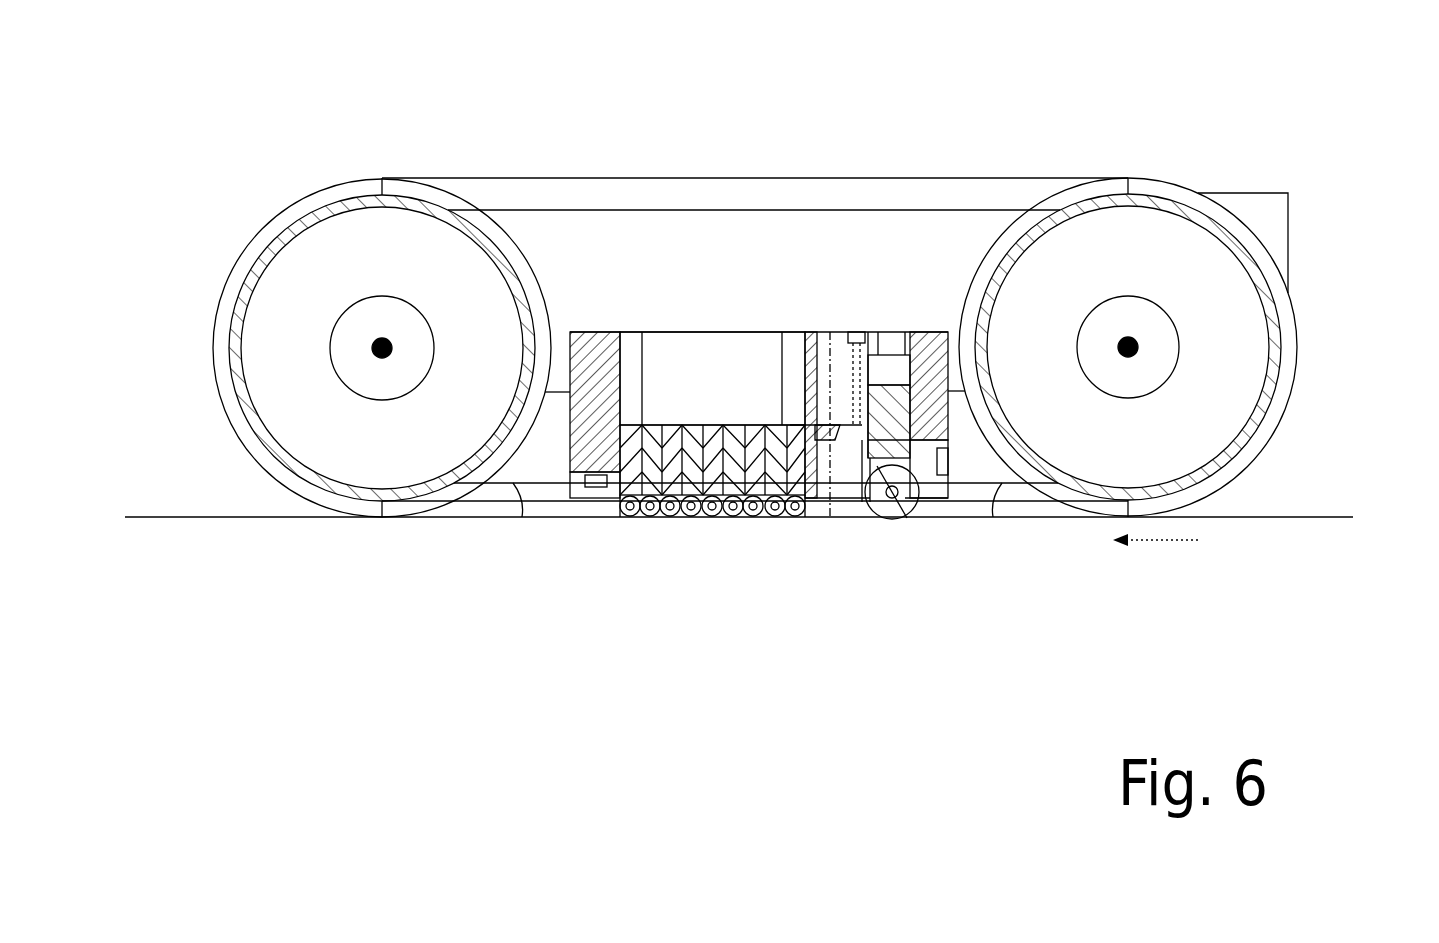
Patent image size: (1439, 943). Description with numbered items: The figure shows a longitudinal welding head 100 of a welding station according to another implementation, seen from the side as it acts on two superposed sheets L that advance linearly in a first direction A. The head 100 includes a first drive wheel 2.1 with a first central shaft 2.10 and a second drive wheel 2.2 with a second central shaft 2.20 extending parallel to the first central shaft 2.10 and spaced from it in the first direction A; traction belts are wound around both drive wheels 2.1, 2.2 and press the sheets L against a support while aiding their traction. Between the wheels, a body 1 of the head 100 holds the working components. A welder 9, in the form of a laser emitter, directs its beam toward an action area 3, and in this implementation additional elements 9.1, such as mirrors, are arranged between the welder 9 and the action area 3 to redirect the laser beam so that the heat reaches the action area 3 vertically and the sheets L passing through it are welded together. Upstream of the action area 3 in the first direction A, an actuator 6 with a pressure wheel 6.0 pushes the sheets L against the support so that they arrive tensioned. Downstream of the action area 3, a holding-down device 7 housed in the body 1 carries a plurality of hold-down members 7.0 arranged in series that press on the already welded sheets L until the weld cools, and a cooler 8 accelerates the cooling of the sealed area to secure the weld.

The longitudinal welding head 100 is at (355, 110).
The body 1 is at (600, 345).
The first drive wheel 2.1 is at (306, 256).
The first central shaft 2.10 is at (372, 348).
The second drive wheel 2.2 is at (1227, 292).
The second central shaft 2.20 is at (1130, 347).
The action area 3 is at (830, 535).
The actuator 6 is at (890, 545).
The pressure wheel 6.0 is at (925, 505).
The holding-down device 7 is at (718, 562).
The hold-down member 7.0 is at (630, 517).
The cooler 8 is at (598, 487).
The welder 9 is at (855, 338).
The additional elements 9.1 is at (828, 428).
The superposed sheets L is at (207, 517).
The first direction A is at (1155, 563).